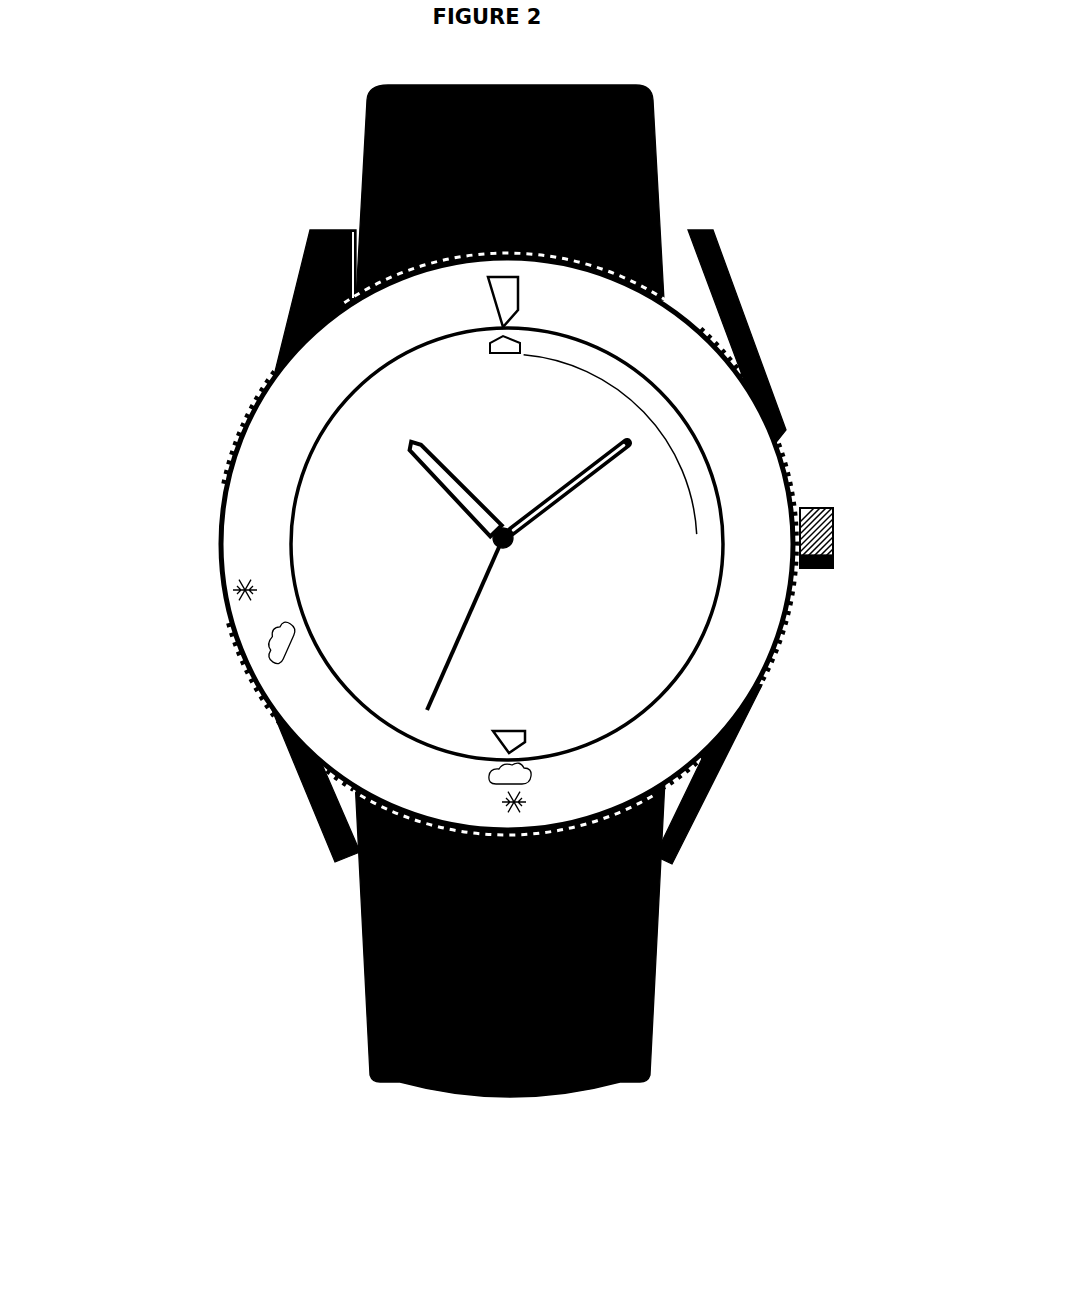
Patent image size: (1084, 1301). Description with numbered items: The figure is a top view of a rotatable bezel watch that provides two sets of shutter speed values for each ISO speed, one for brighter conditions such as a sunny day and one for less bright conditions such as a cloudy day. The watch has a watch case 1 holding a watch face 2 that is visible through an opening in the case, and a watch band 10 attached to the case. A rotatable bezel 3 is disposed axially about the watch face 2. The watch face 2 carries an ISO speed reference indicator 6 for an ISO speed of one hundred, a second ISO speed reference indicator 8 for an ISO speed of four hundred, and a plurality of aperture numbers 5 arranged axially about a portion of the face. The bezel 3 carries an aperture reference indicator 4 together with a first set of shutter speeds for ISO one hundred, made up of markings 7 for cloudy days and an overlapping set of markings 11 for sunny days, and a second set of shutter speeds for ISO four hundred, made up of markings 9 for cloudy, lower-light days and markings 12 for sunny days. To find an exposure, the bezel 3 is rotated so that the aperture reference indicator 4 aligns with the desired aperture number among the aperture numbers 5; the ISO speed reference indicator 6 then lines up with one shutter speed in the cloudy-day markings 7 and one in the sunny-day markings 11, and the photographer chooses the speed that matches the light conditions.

The watch case 1 is at (708, 260).
The watch face 2 is at (365, 560).
The rotatable bezel 3 is at (777, 418).
The aperture reference indicator 4 is at (525, 291).
The aperture numbers 5 is at (708, 488).
The ISO speed reference indicator 6 is at (478, 343).
The shutter speed markings for cloudy days (ISO 100) 7 is at (293, 417).
The second ISO speed reference indicator 8 is at (487, 738).
The shutter speed markings for cloudy days (ISO 400) 9 is at (692, 712).
The watch band 10 is at (668, 163).
The shutter speed markings for sunny days (ISO 100) 11 is at (238, 453).
The shutter speed markings for sunny days (ISO 400) 12 is at (770, 653).